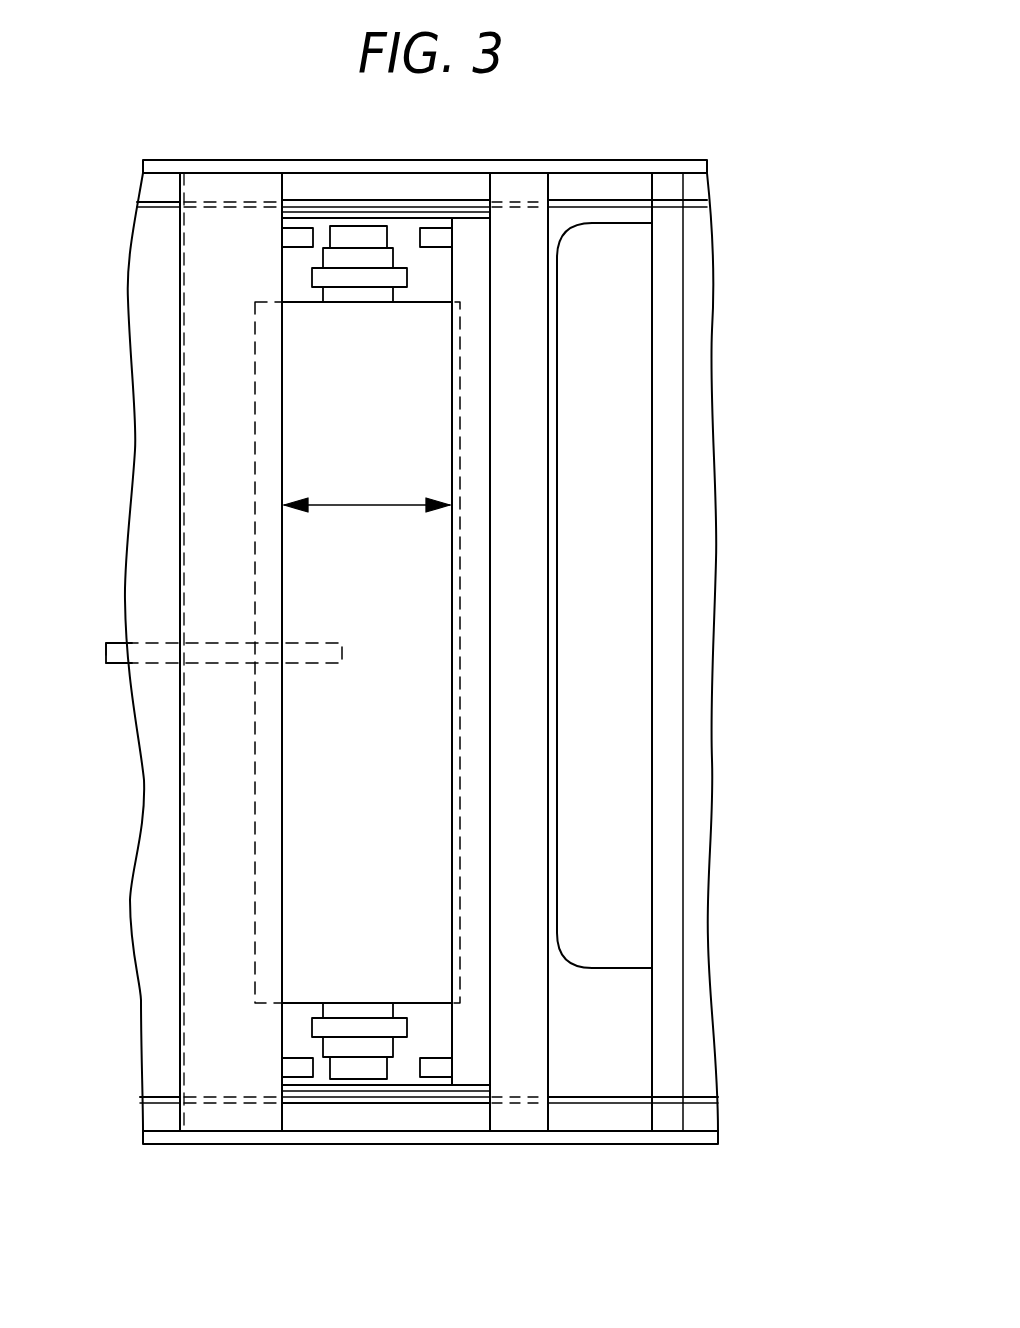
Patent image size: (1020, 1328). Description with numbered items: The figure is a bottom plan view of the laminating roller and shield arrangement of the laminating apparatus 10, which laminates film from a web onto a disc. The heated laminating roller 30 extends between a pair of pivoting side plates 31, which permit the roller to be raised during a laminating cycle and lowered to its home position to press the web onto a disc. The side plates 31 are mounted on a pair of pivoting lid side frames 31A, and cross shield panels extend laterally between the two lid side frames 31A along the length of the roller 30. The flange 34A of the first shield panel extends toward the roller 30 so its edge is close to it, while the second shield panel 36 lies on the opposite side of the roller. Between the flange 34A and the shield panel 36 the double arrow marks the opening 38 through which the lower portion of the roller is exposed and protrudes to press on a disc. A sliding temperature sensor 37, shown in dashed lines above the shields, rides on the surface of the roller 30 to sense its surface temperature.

The laminating apparatus 10 is at (182, 1142).
The heated laminating roller 30 is at (368, 975).
The pivoting side plates 31 is at (607, 197).
The pivoting lid side frames 31A is at (418, 160).
The flange of shield panel 34A is at (228, 1115).
The second shield panel 36 is at (482, 723).
The sliding temperature sensor 37 is at (320, 668).
The opening 38 is at (366, 500).